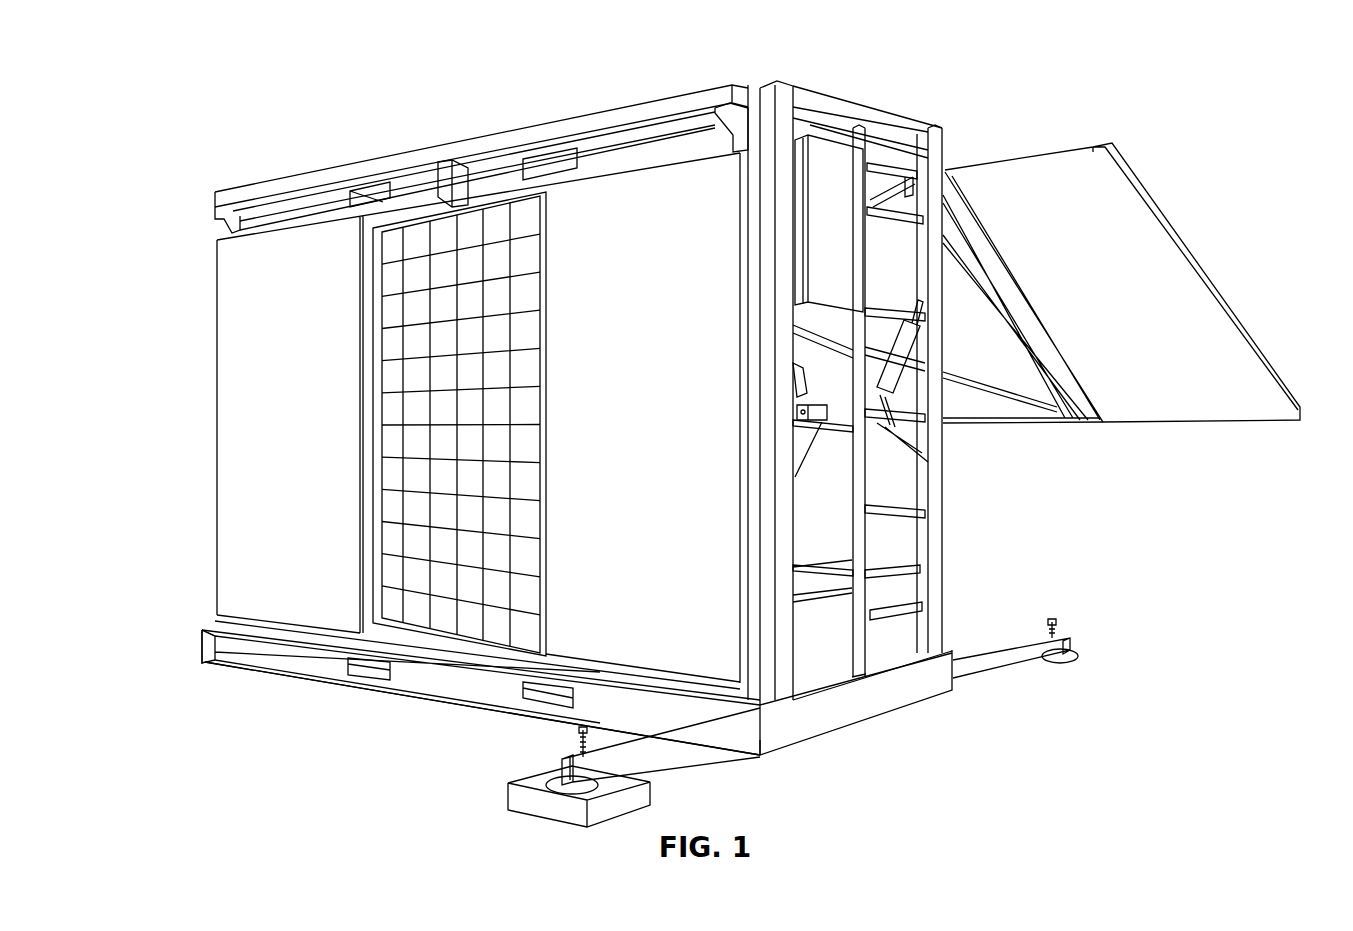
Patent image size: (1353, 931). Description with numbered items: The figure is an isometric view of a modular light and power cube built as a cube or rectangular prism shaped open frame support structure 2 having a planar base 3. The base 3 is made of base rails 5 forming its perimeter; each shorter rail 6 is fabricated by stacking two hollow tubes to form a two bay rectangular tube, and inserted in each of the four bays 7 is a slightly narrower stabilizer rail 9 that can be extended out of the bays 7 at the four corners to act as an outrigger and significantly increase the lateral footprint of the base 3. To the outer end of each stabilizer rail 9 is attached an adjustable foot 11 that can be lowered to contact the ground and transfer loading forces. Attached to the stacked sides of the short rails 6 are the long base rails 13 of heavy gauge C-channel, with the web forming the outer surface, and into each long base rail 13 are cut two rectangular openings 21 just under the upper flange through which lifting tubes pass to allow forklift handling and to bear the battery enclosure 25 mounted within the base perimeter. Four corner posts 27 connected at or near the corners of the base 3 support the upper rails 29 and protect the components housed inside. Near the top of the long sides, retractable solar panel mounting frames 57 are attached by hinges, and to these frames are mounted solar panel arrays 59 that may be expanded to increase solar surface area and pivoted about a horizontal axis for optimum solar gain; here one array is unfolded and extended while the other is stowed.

The open frame support structure 2 is at (999, 100).
The base 3 is at (818, 742).
The base rails 5 is at (291, 672).
The short rails 6 is at (788, 733).
The bays 7 is at (211, 655).
The stabilizer rails 9 is at (672, 746).
The adjustable foot 11 is at (500, 803).
The long base rails 13 is at (330, 678).
The rectangular openings 21 is at (386, 673).
The battery enclosure 25 is at (831, 645).
The corner posts 27 is at (787, 95).
The upper rails 29 is at (755, 95).
The retractable solar panel mounting frames 57 is at (1080, 420).
The solar panel arrays 59 is at (1093, 147).